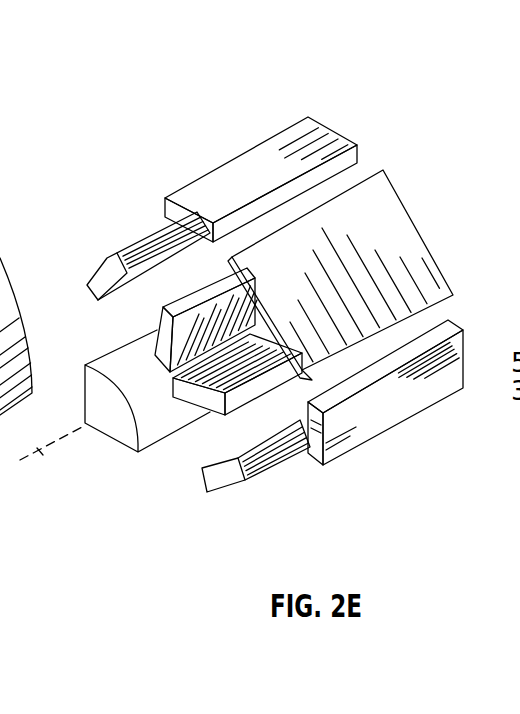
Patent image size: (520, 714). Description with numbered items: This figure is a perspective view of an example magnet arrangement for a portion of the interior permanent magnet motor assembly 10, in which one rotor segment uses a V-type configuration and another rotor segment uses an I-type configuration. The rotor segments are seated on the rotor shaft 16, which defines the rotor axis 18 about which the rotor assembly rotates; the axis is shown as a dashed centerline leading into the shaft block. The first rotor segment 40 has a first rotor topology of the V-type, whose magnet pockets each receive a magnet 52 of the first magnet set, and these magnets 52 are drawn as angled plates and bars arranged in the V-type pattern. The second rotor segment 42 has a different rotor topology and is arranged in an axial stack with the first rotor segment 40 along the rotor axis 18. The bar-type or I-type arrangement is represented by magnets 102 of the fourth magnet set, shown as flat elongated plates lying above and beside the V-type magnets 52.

The interior permanent magnet motor assembly 10 is at (476, 340).
The rotor shaft 16 is at (139, 461).
The rotor axis 18 is at (43, 457).
The first rotor segment 40 is at (294, 479).
The second rotor segment 42 is at (422, 426).
The magnet 52 is at (78, 294).
The magnet 102 is at (338, 113).